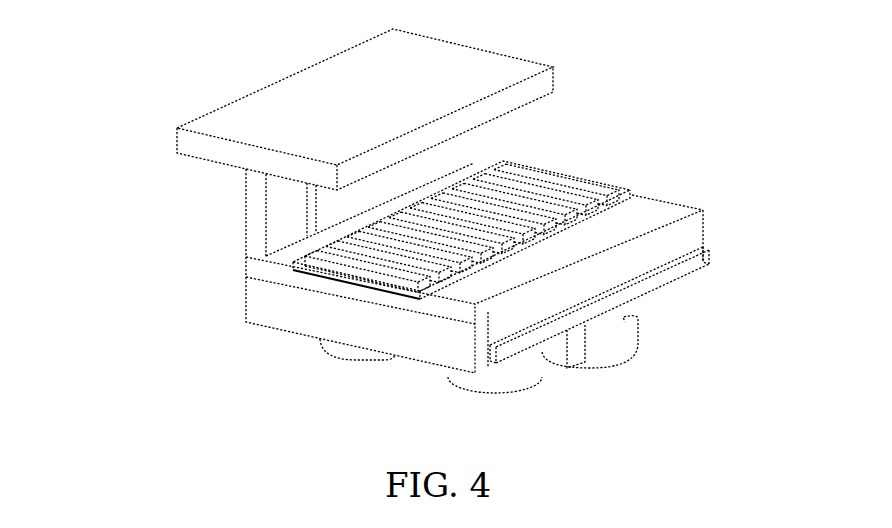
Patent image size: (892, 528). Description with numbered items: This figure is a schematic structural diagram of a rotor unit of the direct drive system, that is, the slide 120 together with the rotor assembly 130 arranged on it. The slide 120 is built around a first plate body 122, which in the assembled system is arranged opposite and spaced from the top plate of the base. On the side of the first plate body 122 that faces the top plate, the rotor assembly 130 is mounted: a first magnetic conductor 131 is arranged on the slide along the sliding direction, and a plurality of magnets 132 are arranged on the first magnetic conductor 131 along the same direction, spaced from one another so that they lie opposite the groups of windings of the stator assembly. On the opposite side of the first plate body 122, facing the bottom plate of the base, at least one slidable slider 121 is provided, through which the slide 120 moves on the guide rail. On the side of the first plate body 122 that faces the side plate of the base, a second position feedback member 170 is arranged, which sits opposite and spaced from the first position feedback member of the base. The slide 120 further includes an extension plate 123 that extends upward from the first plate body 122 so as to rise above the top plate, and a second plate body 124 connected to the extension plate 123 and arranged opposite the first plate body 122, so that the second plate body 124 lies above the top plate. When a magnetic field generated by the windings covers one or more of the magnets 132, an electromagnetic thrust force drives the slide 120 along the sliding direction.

The slide 120 is at (130, 231).
The slider 121 is at (613, 345).
The first plate body 122 is at (307, 320).
The extension plate 123 is at (255, 235).
The second plate body 124 is at (233, 153).
The rotor assembly 130 is at (728, 80).
The first magnetic conductor 131 is at (632, 192).
The magnets 132 is at (578, 166).
The second position feedback member 170 is at (700, 257).